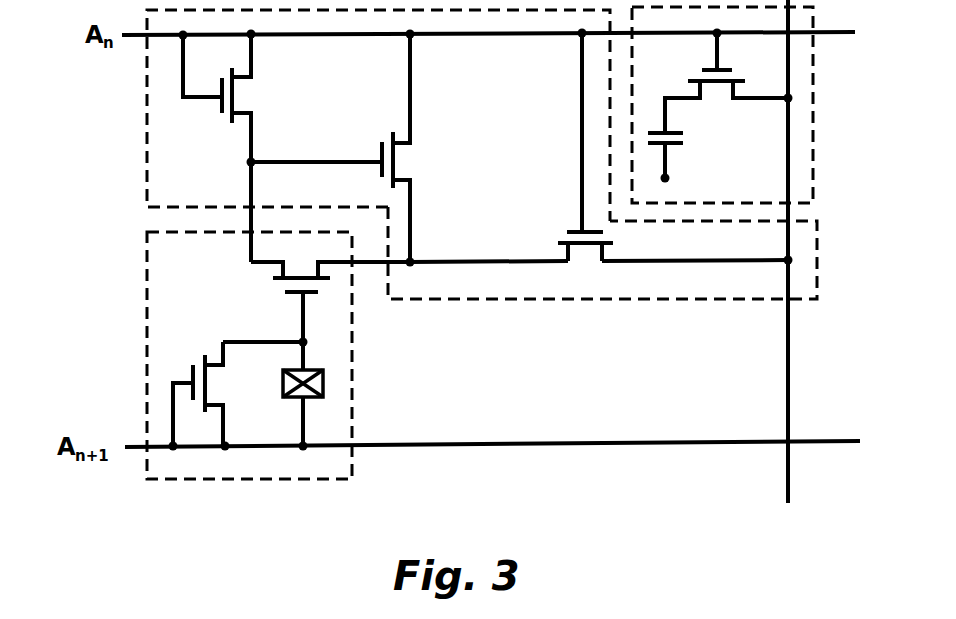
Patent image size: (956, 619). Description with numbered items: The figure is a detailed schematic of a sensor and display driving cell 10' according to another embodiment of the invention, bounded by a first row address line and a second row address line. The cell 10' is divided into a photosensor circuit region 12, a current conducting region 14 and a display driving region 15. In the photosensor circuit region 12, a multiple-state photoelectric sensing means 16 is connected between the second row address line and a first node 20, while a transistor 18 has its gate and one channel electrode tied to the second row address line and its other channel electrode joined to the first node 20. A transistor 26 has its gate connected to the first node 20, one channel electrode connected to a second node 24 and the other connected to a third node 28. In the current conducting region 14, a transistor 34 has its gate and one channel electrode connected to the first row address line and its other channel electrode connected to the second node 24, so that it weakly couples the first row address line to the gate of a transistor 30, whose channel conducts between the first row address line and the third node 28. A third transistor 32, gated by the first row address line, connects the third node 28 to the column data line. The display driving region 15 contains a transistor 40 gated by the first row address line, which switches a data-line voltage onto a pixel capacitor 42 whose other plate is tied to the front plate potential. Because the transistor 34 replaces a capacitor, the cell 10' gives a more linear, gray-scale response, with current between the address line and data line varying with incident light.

The cell 10' is at (326, 115).
The photosensor circuit region 12 is at (146, 288).
The current conducting region 14 is at (553, 300).
The display driving region 15 is at (816, 118).
The photoelectric sensing means 16 is at (325, 378).
The transistor 18 is at (190, 380).
The first node 20 is at (310, 341).
The second node 24 is at (253, 160).
The transistor 26 is at (272, 275).
The third node 28 is at (415, 258).
The transistor 30 is at (405, 177).
The third transistor 32 is at (572, 229).
The transistor 34 is at (245, 107).
The transistor 40 is at (702, 74).
The capacitor 42 is at (680, 131).